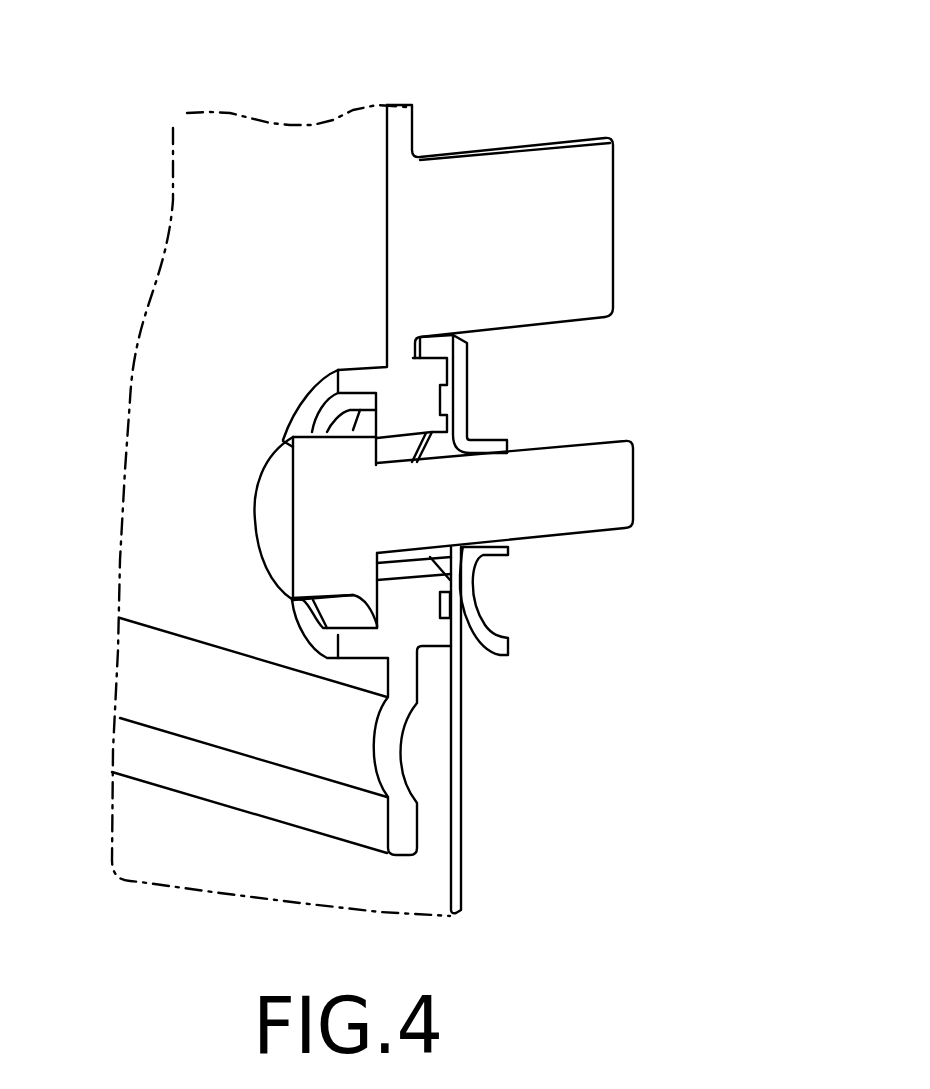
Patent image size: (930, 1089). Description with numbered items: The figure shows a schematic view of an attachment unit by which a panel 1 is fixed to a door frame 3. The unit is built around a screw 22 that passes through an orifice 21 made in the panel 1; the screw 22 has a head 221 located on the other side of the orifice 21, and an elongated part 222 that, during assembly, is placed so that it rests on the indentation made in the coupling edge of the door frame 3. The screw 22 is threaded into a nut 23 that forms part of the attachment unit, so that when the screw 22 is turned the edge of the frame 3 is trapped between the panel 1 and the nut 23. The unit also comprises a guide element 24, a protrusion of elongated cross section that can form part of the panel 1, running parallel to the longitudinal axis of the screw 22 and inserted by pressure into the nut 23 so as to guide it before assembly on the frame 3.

The panel 1 is at (313, 237).
The door frame 3 is at (478, 884).
The orifice 21 is at (413, 567).
The screw 22 is at (402, 511).
The nut 23 is at (485, 416).
The guide element 24 is at (530, 238).
The head 221 is at (277, 487).
The elongated part 222 is at (565, 492).